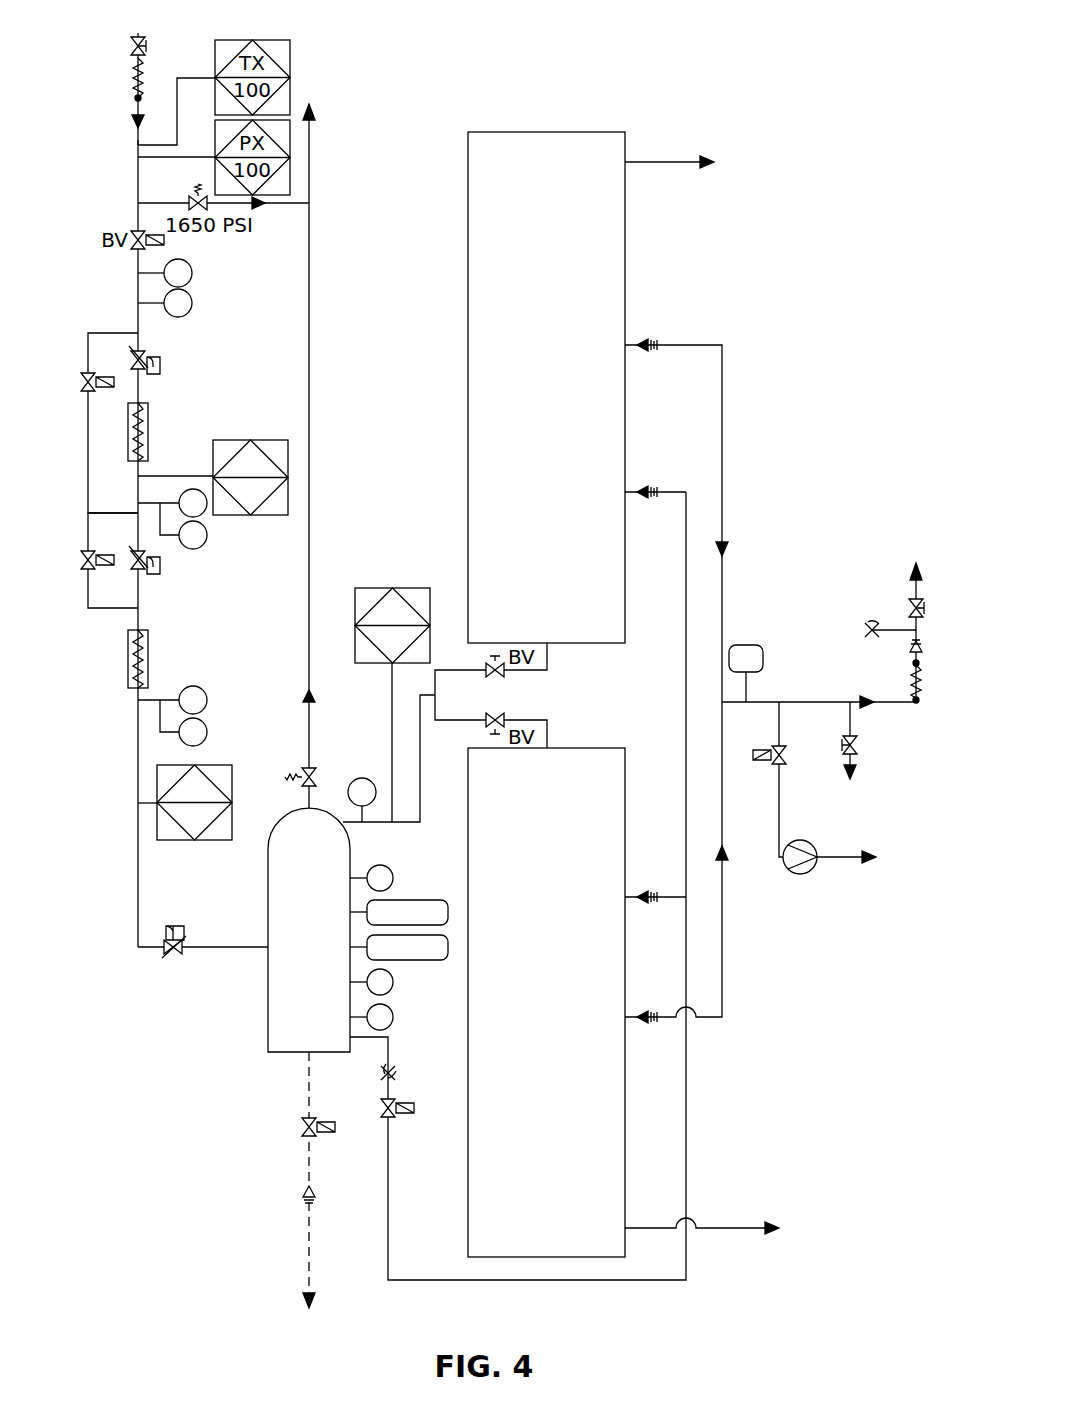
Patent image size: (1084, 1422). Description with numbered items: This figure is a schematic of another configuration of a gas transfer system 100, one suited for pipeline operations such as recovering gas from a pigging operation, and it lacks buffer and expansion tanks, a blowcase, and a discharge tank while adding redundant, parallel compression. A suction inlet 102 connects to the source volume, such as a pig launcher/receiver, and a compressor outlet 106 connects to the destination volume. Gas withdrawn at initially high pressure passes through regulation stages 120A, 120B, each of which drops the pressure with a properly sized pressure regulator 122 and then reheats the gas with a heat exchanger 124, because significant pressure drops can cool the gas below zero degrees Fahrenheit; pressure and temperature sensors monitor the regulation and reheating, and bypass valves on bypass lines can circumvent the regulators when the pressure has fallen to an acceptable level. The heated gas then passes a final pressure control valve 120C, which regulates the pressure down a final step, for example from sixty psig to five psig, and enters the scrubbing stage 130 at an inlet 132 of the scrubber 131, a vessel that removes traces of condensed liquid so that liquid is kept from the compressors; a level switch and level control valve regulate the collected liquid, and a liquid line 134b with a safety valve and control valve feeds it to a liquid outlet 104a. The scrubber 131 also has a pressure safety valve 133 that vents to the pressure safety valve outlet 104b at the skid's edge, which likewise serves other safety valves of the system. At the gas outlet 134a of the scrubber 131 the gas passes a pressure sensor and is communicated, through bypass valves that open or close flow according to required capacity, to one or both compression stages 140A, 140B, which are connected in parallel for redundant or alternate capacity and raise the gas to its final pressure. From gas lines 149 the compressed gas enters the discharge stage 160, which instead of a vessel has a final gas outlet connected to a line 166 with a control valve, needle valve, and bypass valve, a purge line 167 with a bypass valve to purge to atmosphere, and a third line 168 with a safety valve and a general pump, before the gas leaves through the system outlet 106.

The gas transfer system 100 is at (651, 93).
The suction inlet 102 is at (118, 29).
The liquid outlet 104a is at (280, 1307).
The pressure safety valve header and outlet 104b is at (340, 145).
The compressor outlet 106 is at (942, 553).
The first regulation stage 120A is at (106, 324).
The second regulation stage 120B is at (106, 632).
The final pressure control valve 120C is at (173, 962).
The pressure regulator 122 is at (216, 370).
The heat exchanger 124 is at (204, 410).
The scrubbing stage 130 is at (242, 1057).
The scrubber 131 is at (276, 1053).
The scrubber inlet 132 is at (268, 945).
The pressure safety valve 133 is at (312, 769).
The gas outlet of the scrubber 134a is at (352, 826).
The liquid line 134b is at (388, 1195).
The first compression stage 140A is at (517, 397).
The second compression stage 140B is at (517, 1009).
The gas lines 149 is at (708, 338).
The discharge stage 160 is at (835, 595).
The final gas outlet line 166 is at (883, 704).
The purge line 167 is at (846, 766).
The third line 168 is at (779, 838).